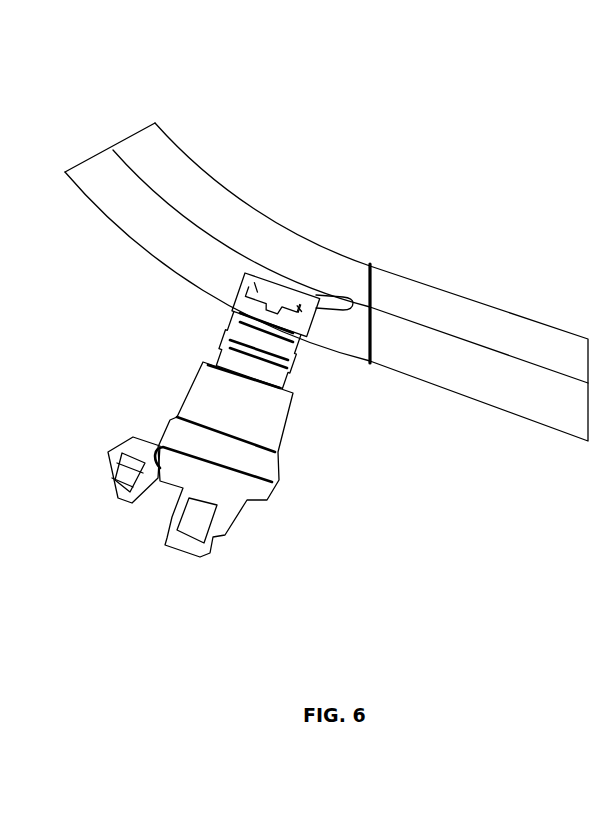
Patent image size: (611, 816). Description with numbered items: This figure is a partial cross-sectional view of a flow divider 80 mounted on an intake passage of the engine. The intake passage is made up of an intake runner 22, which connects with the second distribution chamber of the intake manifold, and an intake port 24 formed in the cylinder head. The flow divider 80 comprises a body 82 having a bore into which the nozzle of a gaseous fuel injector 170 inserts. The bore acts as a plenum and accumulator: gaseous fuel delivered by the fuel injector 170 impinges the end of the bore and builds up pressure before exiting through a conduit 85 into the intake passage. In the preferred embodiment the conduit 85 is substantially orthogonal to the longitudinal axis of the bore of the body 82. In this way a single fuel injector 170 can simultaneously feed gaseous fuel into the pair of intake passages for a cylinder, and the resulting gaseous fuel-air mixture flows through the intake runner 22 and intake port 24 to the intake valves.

The intake runner 22 is at (193, 160).
The intake port 24 is at (464, 297).
The flow divider 80 is at (242, 236).
The body 82 is at (272, 283).
The conduit 85 is at (332, 295).
The gaseous fuel injector 170 is at (198, 417).